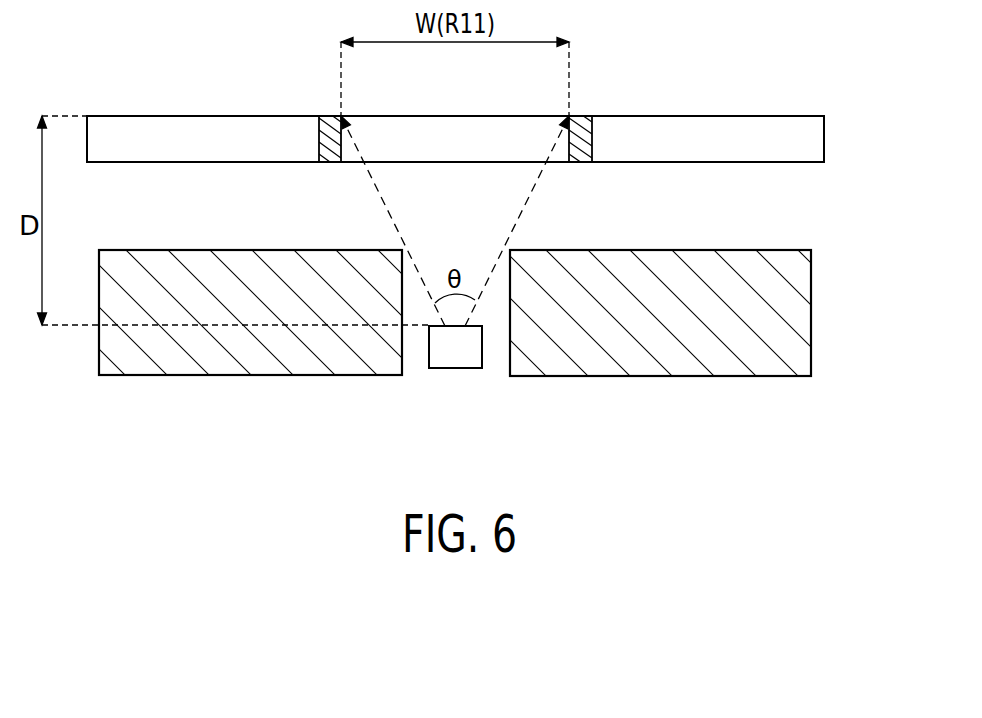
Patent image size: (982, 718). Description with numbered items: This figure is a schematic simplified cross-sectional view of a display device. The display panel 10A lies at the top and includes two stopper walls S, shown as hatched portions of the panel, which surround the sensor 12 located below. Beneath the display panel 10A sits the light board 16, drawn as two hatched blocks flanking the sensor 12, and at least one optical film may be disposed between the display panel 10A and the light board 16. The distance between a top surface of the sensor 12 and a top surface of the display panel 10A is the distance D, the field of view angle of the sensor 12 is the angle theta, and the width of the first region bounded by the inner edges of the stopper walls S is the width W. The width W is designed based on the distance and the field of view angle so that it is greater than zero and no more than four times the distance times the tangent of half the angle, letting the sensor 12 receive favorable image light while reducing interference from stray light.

The display panel 10A is at (793, 142).
The stopper wall S is at (331, 133).
The light board 16 is at (793, 319).
The sensor 12 is at (469, 359).